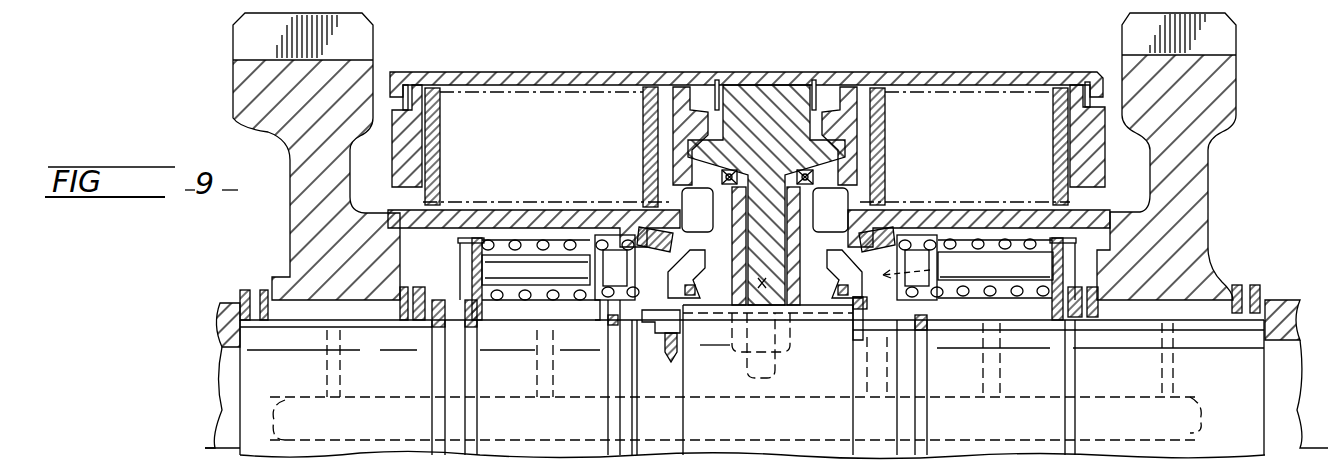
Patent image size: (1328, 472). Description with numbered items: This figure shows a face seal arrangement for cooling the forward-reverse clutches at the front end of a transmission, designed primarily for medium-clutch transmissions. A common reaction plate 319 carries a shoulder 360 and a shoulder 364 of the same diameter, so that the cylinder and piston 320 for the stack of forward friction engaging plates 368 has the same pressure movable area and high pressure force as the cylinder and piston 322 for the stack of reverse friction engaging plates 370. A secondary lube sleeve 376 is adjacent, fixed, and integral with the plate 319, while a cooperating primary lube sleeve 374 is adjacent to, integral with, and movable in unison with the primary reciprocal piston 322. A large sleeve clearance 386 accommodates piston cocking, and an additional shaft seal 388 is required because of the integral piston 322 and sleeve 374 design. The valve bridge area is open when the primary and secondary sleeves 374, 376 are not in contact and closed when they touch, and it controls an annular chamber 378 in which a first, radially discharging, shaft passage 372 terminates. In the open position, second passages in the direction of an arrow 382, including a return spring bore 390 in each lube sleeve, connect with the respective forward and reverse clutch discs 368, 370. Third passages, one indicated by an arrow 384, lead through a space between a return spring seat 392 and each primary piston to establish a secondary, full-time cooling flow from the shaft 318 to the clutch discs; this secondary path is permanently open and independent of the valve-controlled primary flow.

The shaft 318 is at (1024, 340).
The common reaction plate 319 is at (753, 98).
The cylinder and piston for forward friction engaging plates 320 is at (797, 218).
The cylinder and piston for reverse friction engaging plates 322 is at (683, 97).
The shoulder 360 is at (805, 172).
The shoulder 364 is at (731, 172).
The forward friction engaging plates 368 is at (1067, 90).
The reverse friction engaging plates 370 is at (652, 110).
The first shaft passage 372 is at (670, 350).
The primary lube sleeve 374 is at (645, 238).
The secondary lube sleeve 376 is at (707, 296).
The annular chamber 378 is at (668, 320).
The arrow 382 is at (928, 270).
The arrow 384 is at (1000, 290).
The large sleeve clearance 386 is at (597, 320).
The additional shaft seal 388 is at (612, 327).
The return spring bore 390 is at (662, 240).
The return spring seat 392 is at (477, 238).